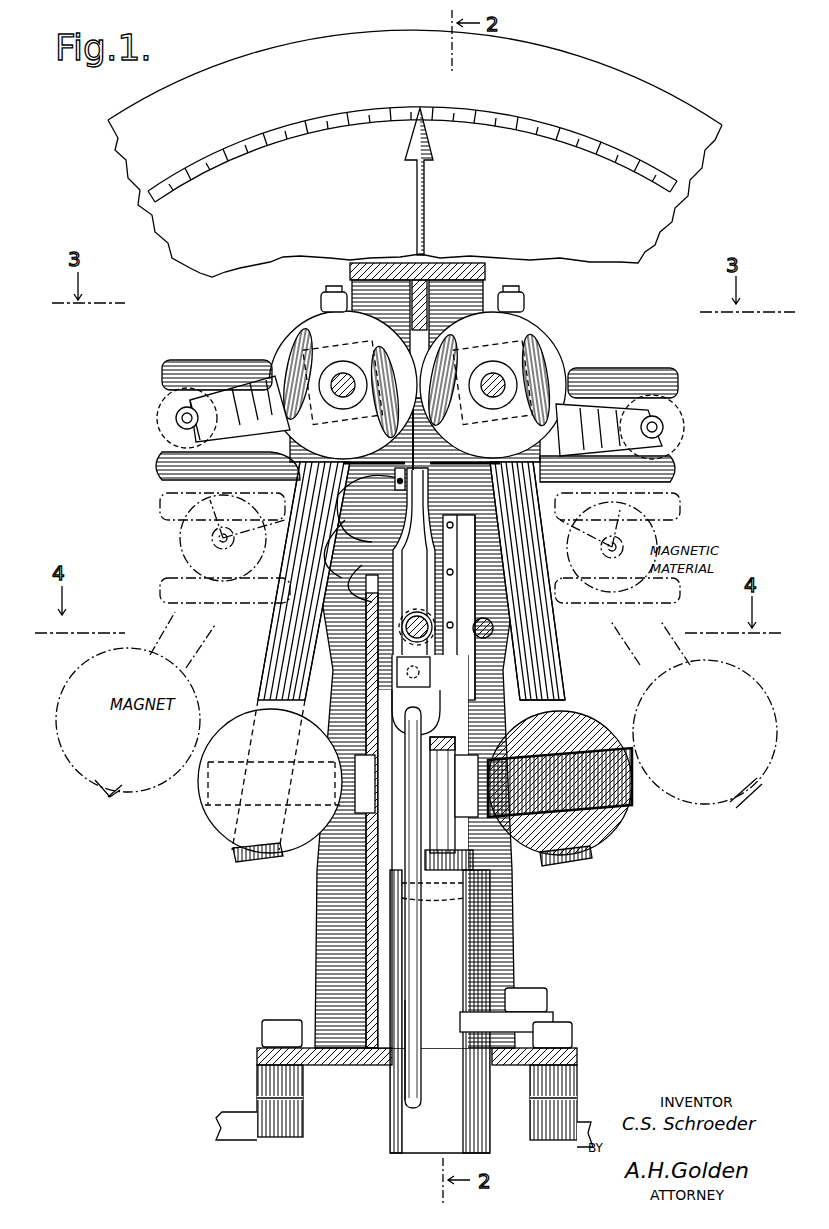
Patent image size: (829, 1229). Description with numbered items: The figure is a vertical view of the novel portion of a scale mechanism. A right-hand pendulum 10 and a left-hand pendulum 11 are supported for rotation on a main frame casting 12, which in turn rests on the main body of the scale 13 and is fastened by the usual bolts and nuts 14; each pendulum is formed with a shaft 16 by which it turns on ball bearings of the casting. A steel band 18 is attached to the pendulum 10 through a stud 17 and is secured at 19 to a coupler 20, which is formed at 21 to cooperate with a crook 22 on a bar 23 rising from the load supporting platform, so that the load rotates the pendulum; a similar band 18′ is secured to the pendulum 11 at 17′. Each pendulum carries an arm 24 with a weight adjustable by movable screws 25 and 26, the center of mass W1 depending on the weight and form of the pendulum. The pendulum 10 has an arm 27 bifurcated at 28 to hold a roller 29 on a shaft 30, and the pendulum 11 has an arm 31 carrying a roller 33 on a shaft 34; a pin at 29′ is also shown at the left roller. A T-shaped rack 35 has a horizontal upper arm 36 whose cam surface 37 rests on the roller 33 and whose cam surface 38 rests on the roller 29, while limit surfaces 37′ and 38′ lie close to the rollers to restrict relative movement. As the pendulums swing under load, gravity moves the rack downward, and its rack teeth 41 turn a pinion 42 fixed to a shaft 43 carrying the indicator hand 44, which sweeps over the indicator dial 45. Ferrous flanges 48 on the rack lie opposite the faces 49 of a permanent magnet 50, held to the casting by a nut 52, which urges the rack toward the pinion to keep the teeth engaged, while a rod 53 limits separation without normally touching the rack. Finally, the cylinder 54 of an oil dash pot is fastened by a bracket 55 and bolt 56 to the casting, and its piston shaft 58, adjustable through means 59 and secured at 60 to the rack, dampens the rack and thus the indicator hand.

The right-hand pendulum 10 is at (558, 331).
The left-hand pendulum 11 is at (293, 318).
The main frame casting 12 is at (522, 919).
The main body of the scale 13 is at (594, 1119).
The bolts and nuts 14 is at (262, 1036).
The shaft 16 is at (500, 383).
The stud 17 is at (508, 290).
The band attachment point 17′ is at (333, 290).
The steel band 18 is at (456, 300).
The band 18′ is at (366, 340).
The band securing point 19 is at (372, 505).
The coupler 20 is at (398, 636).
The coupler formation 21 is at (406, 722).
The crook 22 is at (394, 714).
The bar 23 is at (406, 818).
The arm 24 is at (262, 583).
The movable screw 25 is at (230, 790).
The movable screw 26 is at (250, 830).
The arm 27 is at (256, 398).
The bifurcation 28 is at (196, 405).
The roller 29 is at (158, 421).
The pivot pin 29′ is at (176, 428).
The shaft 30 is at (182, 417).
The arm 31 is at (585, 405).
The roller 33 is at (668, 412).
The shaft 34 is at (662, 427).
The rack 35 is at (470, 606).
The horizontally extending upper arm 36 is at (365, 478).
The cam surface 37 is at (655, 370).
The limit surface 37′ is at (676, 470).
The cam surface 38 is at (232, 392).
The limit surface 38′ is at (200, 466).
The rack teeth 41 is at (405, 480).
The pinion 42 is at (395, 598).
The shaft 43 is at (400, 630).
The indicator hand 44 is at (428, 205).
The indicator dial 45 is at (536, 117).
The flanges 48 is at (460, 562).
The faces 49 is at (490, 680).
The permanent magnet 50 is at (372, 692).
The nut 52 is at (397, 672).
The rod 53 is at (490, 640).
The cylinder 54 is at (455, 950).
The bracket 55 is at (505, 1024).
The bolt 56 is at (522, 990).
The shaft 58 is at (440, 828).
The adjusting means 59 is at (430, 762).
The rack attachment point 60 is at (545, 716).
The center of mass W1 is at (62, 760).